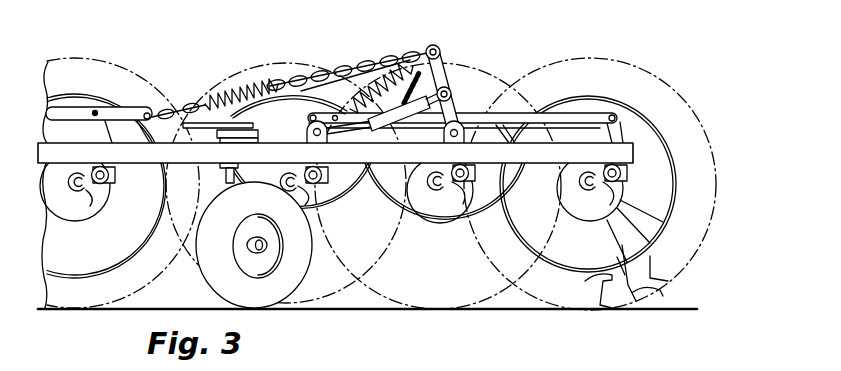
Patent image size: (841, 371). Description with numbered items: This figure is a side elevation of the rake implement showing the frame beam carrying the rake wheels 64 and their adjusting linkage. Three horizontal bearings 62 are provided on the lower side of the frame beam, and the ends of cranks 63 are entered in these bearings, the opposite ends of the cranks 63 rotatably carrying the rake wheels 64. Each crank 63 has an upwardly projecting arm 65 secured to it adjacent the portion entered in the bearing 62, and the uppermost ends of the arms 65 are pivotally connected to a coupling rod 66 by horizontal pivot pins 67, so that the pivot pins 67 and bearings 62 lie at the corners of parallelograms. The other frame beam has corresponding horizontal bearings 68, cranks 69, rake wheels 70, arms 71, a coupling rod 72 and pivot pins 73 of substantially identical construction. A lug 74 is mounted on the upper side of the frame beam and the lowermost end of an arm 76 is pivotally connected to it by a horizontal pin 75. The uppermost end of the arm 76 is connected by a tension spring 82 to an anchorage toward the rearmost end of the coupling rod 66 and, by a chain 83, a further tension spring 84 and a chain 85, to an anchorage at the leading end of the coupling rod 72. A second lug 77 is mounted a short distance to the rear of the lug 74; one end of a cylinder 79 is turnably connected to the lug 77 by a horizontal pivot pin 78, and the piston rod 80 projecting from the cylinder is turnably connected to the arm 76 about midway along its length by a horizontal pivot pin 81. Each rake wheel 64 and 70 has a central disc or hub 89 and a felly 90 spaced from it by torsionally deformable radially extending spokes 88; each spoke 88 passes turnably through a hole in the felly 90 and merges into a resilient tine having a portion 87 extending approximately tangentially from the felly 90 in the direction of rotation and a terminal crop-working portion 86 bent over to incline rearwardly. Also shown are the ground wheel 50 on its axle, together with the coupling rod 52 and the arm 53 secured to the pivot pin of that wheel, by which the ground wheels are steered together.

The ground wheel 50 is at (207, 281).
The coupling rod 52 is at (258, 107).
The arm 53 is at (258, 133).
The horizontal bearings 62 is at (328, 176).
The cranks 63 is at (317, 198).
The rake wheels 64 is at (292, 62).
The upwardly projecting arm 65 is at (645, 123).
The coupling rod 66 is at (523, 118).
The horizontal pivot pins 67 is at (480, 113).
The horizontal bearings 68 is at (114, 178).
The cranks 69 is at (73, 213).
The rake wheels 70 is at (93, 61).
The arms 71 is at (95, 133).
The coupling rod 72 is at (140, 108).
The pivot pins 73 is at (94, 112).
The lug 74 is at (473, 134).
The horizontal pin 75 is at (449, 140).
The arm 76 is at (433, 45).
The second lug 77 is at (381, 128).
The horizontal pivot pin 78 is at (362, 140).
The cylinder 79 is at (401, 122).
The piston rod 80 is at (419, 83).
The horizontal pivot pin 81 is at (448, 91).
The tension spring 82 is at (350, 108).
The chain 83 is at (340, 68).
The further tension spring 84 is at (236, 84).
The chain 85 is at (187, 105).
The terminal crop-working portion 86 is at (653, 288).
The tangential tine portion 87 is at (585, 282).
The spokes 88 is at (632, 236).
The central disc or hub 89 is at (422, 222).
The felly 90 is at (440, 270).